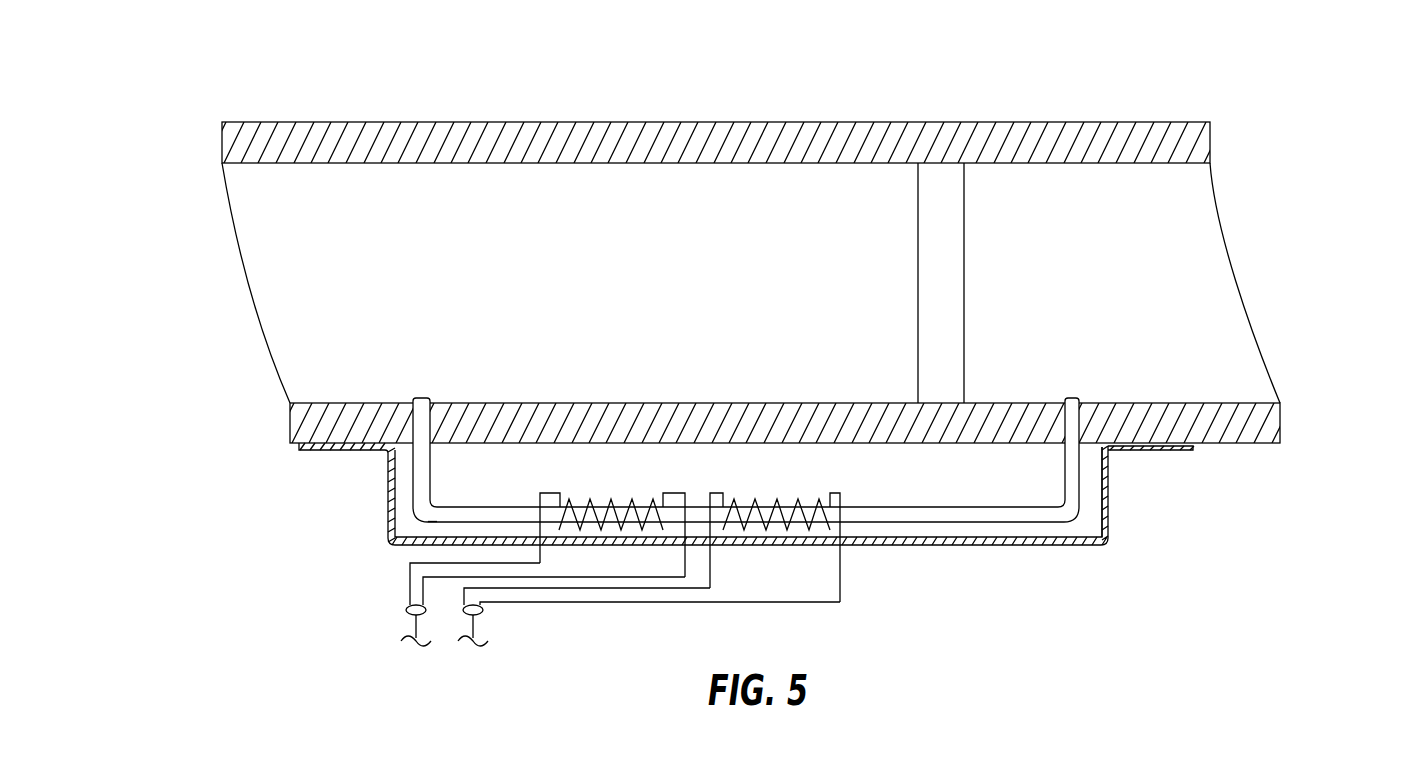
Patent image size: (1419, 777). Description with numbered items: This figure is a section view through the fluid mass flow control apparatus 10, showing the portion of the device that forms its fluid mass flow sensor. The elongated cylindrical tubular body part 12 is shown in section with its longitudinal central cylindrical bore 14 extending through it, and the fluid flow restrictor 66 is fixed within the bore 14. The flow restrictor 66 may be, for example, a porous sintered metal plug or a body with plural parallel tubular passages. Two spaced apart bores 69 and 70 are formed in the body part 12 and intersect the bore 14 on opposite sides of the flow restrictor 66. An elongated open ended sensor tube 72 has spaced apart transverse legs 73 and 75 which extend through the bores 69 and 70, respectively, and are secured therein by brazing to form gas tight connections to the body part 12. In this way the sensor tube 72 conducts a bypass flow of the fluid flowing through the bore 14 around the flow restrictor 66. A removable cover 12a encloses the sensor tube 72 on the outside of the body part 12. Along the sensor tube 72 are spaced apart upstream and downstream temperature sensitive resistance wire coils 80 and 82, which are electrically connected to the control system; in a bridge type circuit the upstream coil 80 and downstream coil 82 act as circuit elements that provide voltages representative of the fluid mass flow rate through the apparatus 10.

The fluid mass flow control apparatus 10 is at (1262, 98).
The tubular body part 12 is at (1082, 120).
The removable cover 12a is at (385, 505).
The longitudinal central cylindrical bore 14 is at (1190, 167).
The fluid flow restrictor 66 is at (965, 213).
The bore 69 is at (430, 422).
The bore 70 is at (1062, 422).
The sensor tube 72 is at (953, 505).
The transverse leg 73 is at (430, 473).
The transverse leg 75 is at (1073, 467).
The upstream temperature sensitive resistance wire coil 80 is at (607, 503).
The downstream temperature sensitive resistance wire coil 82 is at (787, 503).